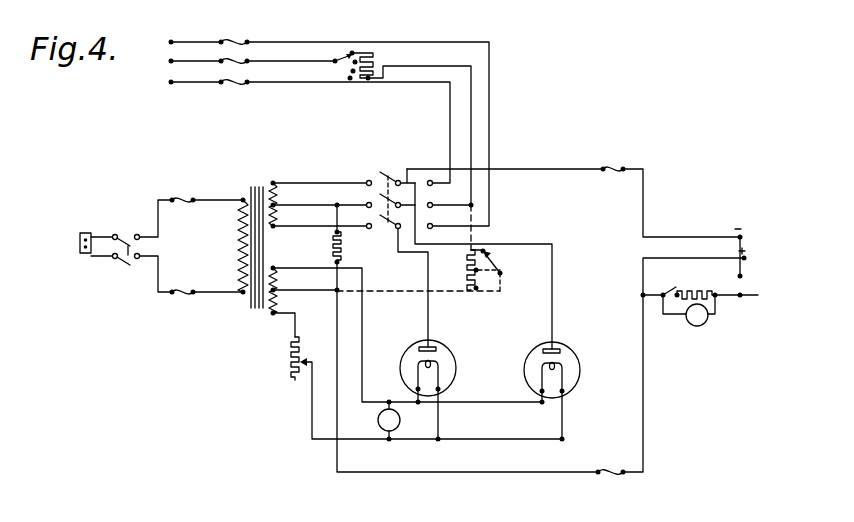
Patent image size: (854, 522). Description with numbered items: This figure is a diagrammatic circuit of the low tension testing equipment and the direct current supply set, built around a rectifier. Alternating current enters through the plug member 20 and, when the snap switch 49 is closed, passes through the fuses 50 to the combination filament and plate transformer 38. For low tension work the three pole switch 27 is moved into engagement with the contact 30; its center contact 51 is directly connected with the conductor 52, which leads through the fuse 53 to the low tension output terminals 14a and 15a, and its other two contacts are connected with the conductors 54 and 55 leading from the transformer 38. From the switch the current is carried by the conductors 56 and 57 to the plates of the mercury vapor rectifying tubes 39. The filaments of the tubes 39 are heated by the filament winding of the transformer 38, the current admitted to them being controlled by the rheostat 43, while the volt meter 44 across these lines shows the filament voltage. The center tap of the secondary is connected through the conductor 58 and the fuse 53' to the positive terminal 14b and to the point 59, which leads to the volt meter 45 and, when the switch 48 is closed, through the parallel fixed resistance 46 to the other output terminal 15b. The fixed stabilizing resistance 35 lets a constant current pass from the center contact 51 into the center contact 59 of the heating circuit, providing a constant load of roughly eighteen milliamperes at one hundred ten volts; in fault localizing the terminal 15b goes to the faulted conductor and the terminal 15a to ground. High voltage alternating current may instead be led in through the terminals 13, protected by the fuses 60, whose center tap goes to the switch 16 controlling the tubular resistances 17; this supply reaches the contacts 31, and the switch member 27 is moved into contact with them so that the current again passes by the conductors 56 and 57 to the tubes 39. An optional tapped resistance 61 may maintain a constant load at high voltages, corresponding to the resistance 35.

The terminals 13 is at (170, 82).
The fuses 60 is at (236, 40).
The switch 16 is at (344, 57).
The tubular resistances 17 is at (371, 51).
The plug member 20 is at (84, 233).
The snap switch 49 is at (126, 263).
The fuses 50 is at (183, 198).
The combination filament and plate transformer 38 is at (257, 186).
The conductor 54 is at (301, 182).
The center contact 51 is at (367, 203).
The conductor 55 is at (318, 227).
The contact 30 is at (369, 180).
The three pole switch 27 is at (392, 174).
The switch contacts 31 is at (430, 180).
The conductor 52 is at (553, 169).
The fuse 53 is at (619, 153).
The fuse 53' is at (620, 397).
The conductor 56 is at (553, 298).
The conductor 57 is at (428, 303).
The fixed stabilizing resistance 35 is at (343, 246).
The conductor 58 is at (336, 313).
The tapped resistance 61 is at (502, 282).
The rheostat 43 is at (288, 363).
The volt meter 44 is at (377, 418).
The mercury vapor rectifying tubes 39 is at (448, 360).
The low tension output terminal 14a is at (742, 234).
The terminal 14b is at (747, 258).
The low tension output terminal 15a is at (743, 276).
The low tension output terminal 15b is at (752, 301).
The center contact of the heating circuit 59 is at (641, 295).
The switch 48 is at (678, 279).
The fixed resistance 46 is at (712, 277).
The volt meter 45 is at (706, 324).